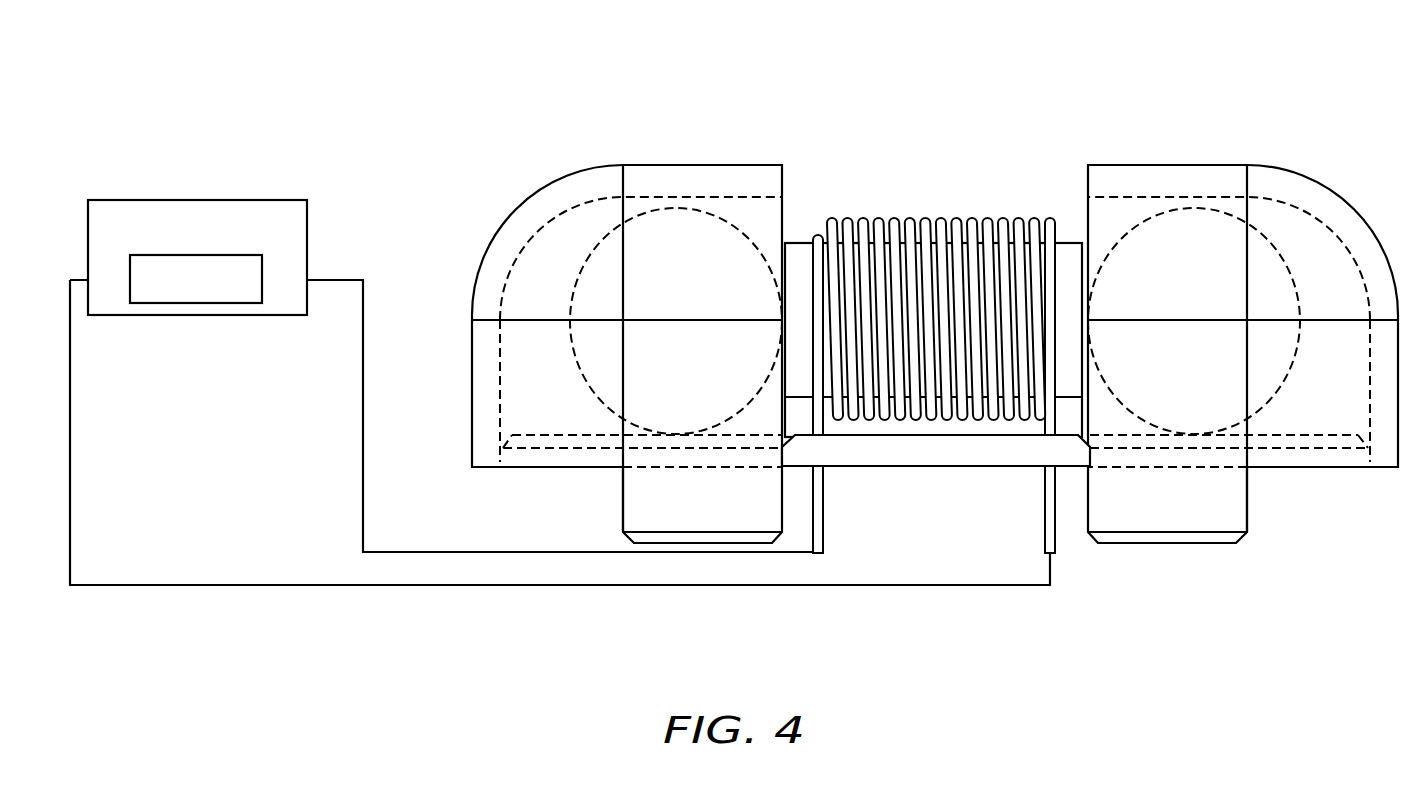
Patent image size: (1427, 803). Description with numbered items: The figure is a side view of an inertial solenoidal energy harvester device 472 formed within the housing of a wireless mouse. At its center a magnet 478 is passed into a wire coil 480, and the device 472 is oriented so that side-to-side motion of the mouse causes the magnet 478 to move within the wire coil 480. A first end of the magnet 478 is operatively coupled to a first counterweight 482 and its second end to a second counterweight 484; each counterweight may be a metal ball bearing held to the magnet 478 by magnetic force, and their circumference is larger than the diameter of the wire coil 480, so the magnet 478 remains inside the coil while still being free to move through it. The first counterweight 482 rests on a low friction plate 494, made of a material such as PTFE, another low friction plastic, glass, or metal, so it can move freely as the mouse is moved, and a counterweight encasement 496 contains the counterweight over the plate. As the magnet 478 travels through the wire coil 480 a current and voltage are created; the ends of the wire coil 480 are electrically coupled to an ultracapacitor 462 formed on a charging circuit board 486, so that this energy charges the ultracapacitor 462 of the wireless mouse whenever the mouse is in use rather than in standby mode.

The inertial solenoidal energy harvester device 472 is at (437, 93).
The charging circuit board 486 is at (225, 200).
The ultracapacitor 462 is at (265, 268).
The first counterweight 482 is at (693, 247).
The second counterweight 484 is at (1210, 247).
The counterweight encasement 496 is at (543, 247).
The magnet 478 is at (1072, 243).
The wire coil 480 is at (955, 220).
The low friction plate 494 is at (915, 450).